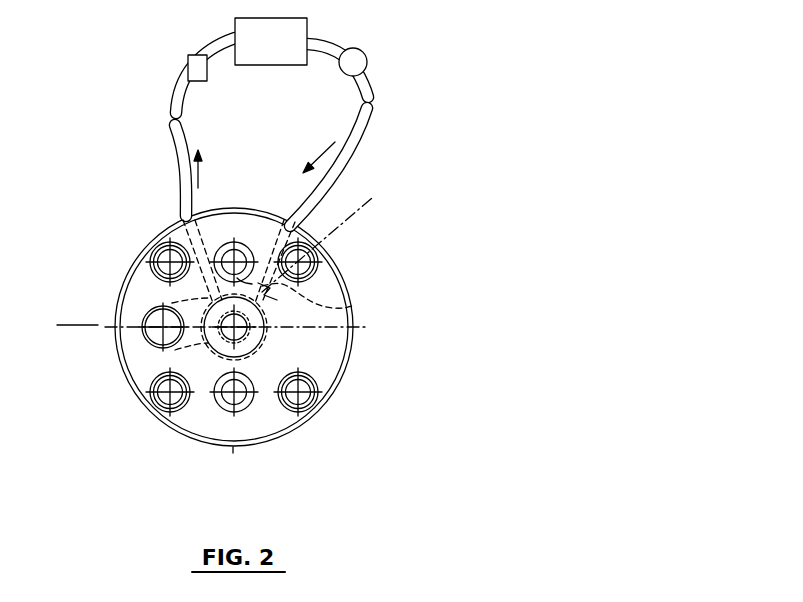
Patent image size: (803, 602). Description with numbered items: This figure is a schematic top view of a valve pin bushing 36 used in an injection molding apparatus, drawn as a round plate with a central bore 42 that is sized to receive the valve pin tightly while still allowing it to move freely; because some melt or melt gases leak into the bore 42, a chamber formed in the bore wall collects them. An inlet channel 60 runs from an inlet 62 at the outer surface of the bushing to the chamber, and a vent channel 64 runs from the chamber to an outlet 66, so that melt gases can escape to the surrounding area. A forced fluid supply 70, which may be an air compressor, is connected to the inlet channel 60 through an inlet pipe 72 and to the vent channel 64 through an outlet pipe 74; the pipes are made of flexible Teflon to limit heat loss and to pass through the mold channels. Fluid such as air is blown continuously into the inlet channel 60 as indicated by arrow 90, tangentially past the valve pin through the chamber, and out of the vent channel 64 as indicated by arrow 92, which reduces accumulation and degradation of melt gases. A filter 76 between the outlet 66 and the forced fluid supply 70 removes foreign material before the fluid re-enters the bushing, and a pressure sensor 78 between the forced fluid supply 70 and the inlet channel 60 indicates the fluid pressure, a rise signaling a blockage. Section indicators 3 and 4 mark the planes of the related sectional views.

The valve pin bushing 36 is at (118, 378).
The bore 42 is at (247, 333).
The inlet channel 60 is at (352, 304).
The inlet 62 is at (283, 222).
The vent channel 64 is at (152, 256).
The outlet 66 is at (182, 214).
The forced fluid supply 70 is at (271, 41).
The inlet pipe 72 is at (362, 133).
The outlet pipe 74 is at (177, 148).
The filter 76 is at (188, 63).
The pressure sensor 78 is at (360, 58).
The arrow 90 is at (334, 142).
The arrow 92 is at (208, 170).
The section line 3- 3 is at (57, 325).
The section line 4- 4 is at (373, 197).